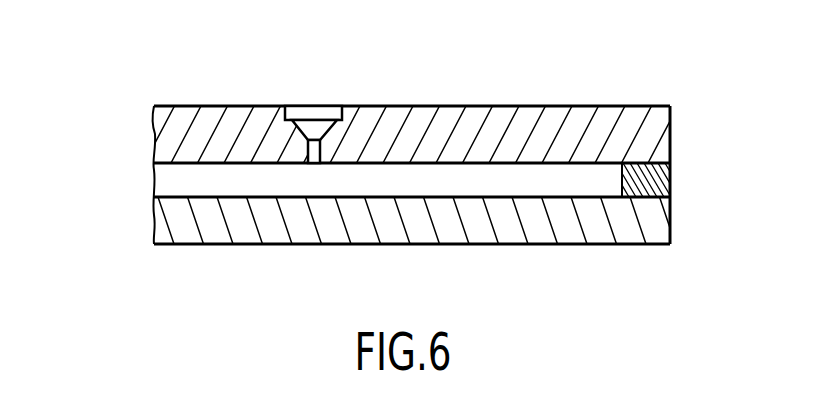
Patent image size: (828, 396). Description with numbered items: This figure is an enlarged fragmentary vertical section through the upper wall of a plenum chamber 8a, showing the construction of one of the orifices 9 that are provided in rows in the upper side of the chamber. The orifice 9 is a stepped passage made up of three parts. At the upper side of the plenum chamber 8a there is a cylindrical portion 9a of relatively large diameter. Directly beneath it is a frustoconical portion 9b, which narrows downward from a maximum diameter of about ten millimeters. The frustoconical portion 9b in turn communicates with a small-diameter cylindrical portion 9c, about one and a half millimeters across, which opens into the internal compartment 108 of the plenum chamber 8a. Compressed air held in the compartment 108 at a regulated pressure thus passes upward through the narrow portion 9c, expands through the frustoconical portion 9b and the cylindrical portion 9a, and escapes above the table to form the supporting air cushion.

The plenum chamber 8a is at (488, 102).
The orifice 9 is at (365, 163).
The cylindrical portion 9a is at (332, 106).
The frustoconical portion 9b is at (337, 128).
The small-diameter cylindrical portion 9c is at (337, 164).
The internal compartment 108 is at (163, 181).